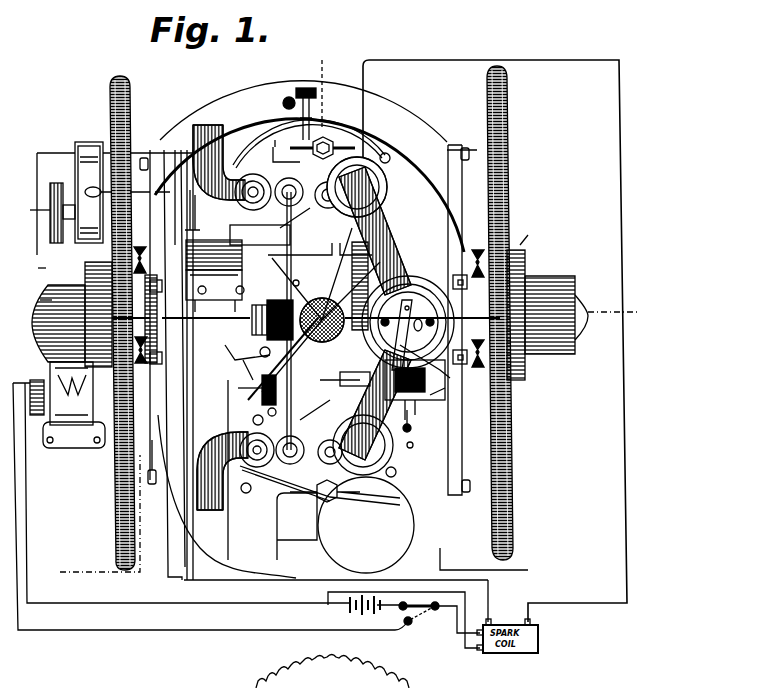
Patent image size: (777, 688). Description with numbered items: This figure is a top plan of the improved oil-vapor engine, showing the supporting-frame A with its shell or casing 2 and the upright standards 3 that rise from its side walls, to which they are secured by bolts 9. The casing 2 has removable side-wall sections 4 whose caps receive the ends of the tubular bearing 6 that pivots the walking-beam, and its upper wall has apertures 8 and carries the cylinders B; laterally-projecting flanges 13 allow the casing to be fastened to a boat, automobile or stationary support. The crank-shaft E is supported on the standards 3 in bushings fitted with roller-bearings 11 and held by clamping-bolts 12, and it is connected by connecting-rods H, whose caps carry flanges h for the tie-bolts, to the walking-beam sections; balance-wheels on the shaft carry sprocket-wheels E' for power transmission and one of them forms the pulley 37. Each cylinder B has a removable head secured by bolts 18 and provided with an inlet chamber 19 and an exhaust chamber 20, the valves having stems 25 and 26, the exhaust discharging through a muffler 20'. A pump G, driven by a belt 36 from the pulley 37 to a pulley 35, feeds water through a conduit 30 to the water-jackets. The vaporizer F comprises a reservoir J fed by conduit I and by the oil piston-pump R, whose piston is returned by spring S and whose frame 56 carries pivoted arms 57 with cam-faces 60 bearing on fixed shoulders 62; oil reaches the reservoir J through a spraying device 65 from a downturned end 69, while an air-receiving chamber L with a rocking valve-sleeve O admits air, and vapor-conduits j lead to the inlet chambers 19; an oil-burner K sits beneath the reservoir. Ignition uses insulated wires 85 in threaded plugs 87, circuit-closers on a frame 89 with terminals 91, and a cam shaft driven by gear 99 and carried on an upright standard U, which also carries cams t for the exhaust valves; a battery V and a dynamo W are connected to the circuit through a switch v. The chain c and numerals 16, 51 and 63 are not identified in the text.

The shell or casing 2 is at (410, 148).
The upright standards 3 is at (150, 214).
The removable side-wall sections 4 is at (353, 311).
The tubular bearing 6 is at (508, 190).
The apertures 8 is at (415, 421).
The bolts 9 is at (466, 492).
The roller-bearings 11 is at (155, 319).
The clamping-bolts 12 is at (92, 275).
The laterally-projecting flanges 13 is at (266, 86).
The bars 16 is at (257, 365).
The bolts 18 is at (284, 104).
The inlet chamber 19 is at (333, 182).
The exhaust chamber 20 is at (257, 320).
The muffler 20' is at (219, 316).
The valve-stem 25 is at (305, 318).
The valve-stem 26 is at (290, 178).
The conduit 30 is at (90, 190).
The pulley 35 is at (38, 213).
The belt 36 is at (38, 268).
The pulley 37 is at (40, 298).
The block 51 is at (190, 250).
The frame 56 is at (335, 385).
The pivoted arms 57 is at (279, 359).
The cam-faces 60 is at (270, 417).
The fixed shoulders 62 is at (257, 393).
The pin 63 is at (252, 420).
The spraying device 65 is at (352, 262).
The downturned end 69 is at (340, 389).
The insulated conductors or wires 85 is at (372, 104).
The threaded tube or plug 87 is at (330, 136).
The frame 89 is at (247, 359).
The terminal 91 is at (221, 283).
The gear 99 is at (375, 231).
The supporting-frame A is at (178, 148).
The cylinders B is at (388, 176).
The crank-shaft E is at (305, 319).
The sprocket-wheels E' is at (341, 349).
The vaporizer F is at (407, 305).
The pump G is at (89, 142).
The connecting-rods H is at (337, 314).
The conduit I is at (226, 560).
The reservoir J is at (424, 284).
The oil-burner K is at (380, 348).
The air-receiving chamber L is at (403, 331).
The rocking valve-sleeve O is at (420, 326).
The piston-pump R is at (244, 391).
The spring S is at (246, 370).
The upright standard U is at (322, 296).
The battery V is at (348, 604).
The dynamo W is at (59, 415).
The chain c is at (114, 517).
The laterally-projecting flanges h is at (304, 319).
The vapor-conduits j is at (430, 395).
The cams t is at (293, 278).
The switch v is at (428, 612).